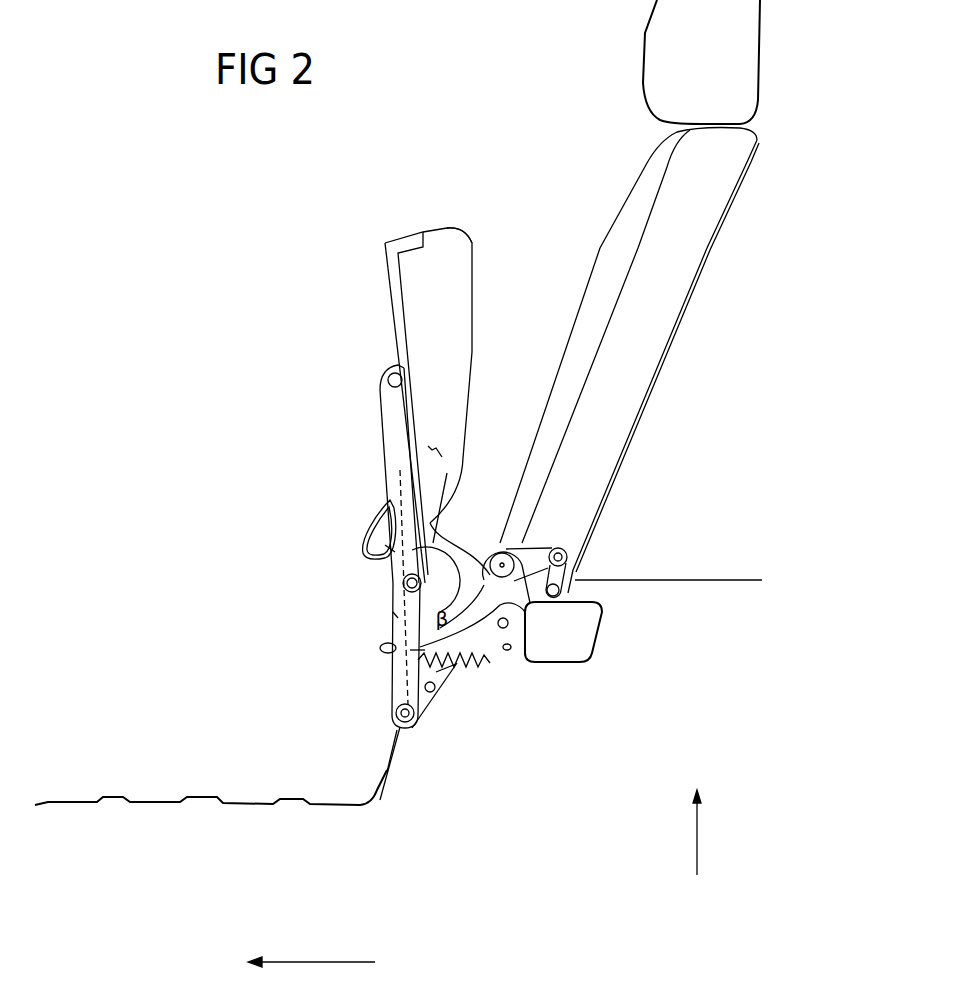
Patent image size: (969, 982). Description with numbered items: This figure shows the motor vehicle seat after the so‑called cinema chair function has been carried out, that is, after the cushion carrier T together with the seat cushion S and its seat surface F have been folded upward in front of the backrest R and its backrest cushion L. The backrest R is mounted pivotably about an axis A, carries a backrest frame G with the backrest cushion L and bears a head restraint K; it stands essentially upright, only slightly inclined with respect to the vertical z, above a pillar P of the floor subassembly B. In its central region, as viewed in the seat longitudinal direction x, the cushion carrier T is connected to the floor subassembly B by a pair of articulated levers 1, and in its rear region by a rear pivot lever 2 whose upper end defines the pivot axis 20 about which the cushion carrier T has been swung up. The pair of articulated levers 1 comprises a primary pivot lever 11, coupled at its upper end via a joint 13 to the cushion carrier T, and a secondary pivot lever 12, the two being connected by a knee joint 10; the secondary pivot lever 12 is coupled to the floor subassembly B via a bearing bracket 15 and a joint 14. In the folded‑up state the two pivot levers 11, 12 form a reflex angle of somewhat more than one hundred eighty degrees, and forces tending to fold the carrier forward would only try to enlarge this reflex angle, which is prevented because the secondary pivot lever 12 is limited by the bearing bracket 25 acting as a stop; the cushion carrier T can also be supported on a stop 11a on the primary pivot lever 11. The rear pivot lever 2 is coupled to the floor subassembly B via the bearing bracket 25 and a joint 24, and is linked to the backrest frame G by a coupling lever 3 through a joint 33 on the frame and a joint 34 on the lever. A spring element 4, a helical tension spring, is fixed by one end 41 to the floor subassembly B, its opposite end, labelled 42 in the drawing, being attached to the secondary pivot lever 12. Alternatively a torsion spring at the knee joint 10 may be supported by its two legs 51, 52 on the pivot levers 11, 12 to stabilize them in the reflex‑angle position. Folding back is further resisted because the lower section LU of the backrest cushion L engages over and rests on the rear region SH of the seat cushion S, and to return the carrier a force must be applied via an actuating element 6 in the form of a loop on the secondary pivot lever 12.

The pair of articulated levers 1 is at (440, 592).
The rear pivot lever 2 is at (475, 588).
The coupling lever 3 is at (527, 662).
The spring element 4 is at (418, 647).
The actuating element 6 is at (368, 533).
The knee joint 10 is at (397, 578).
The primary pivot lever 11 is at (398, 457).
The stop 11a is at (400, 417).
The secondary pivot lever 12 is at (408, 690).
The joint 13 is at (392, 380).
The joint 14 is at (405, 718).
The bearing bracket 15 is at (397, 730).
The pivot axis 20 is at (523, 540).
The joint 24 is at (433, 695).
The bearing bracket 25 is at (447, 687).
The joint 33 is at (567, 552).
The joint 34 is at (417, 647).
The end of spring element 41 is at (487, 667).
The pin 42 is at (380, 650).
The leg of torsion spring 51 is at (393, 552).
The leg of torsion spring 52 is at (395, 615).
The head restraint K is at (745, 57).
The backrest cushion L is at (620, 245).
The backrest frame G is at (650, 328).
The backrest R is at (637, 413).
The seat cushion S is at (448, 228).
The cushion carrier T is at (392, 278).
The seat surface F is at (472, 352).
The rear region of seat cushion SH is at (500, 543).
The lower section of backrest cushion LU is at (507, 503).
The axis A is at (567, 593).
The pillar P is at (572, 665).
The floor subassembly B is at (178, 803).
The vertical z is at (707, 832).
The seat longitudinal direction x is at (311, 945).